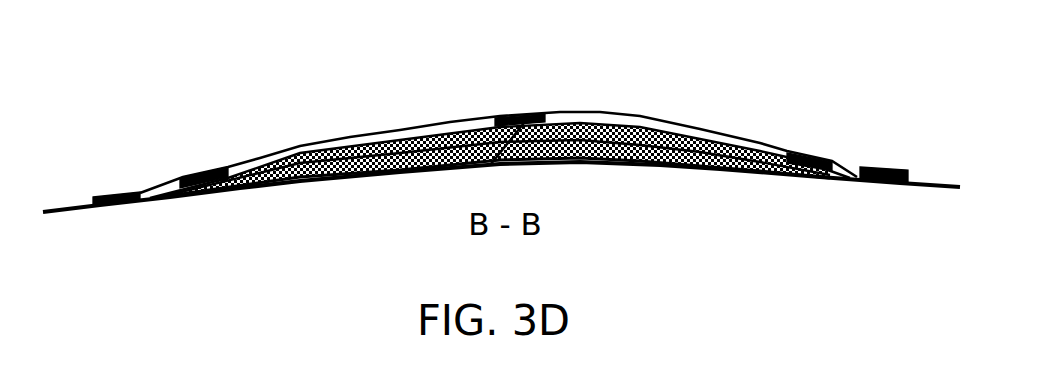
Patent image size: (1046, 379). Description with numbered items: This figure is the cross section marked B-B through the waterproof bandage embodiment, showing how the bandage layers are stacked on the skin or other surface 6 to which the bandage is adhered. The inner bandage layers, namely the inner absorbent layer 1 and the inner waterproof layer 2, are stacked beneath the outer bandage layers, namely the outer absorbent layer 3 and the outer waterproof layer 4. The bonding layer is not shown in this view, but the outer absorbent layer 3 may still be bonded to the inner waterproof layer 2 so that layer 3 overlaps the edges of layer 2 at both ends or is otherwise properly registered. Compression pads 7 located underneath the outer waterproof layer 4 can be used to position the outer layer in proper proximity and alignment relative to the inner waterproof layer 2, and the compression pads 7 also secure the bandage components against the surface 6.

The inner absorbent layer 1 is at (720, 150).
The inner waterproof layer 2 is at (655, 142).
The outer absorbent layer 3 is at (602, 130).
The outer waterproof layer 4 is at (550, 127).
The skin or other surface 6 is at (528, 118).
The compression pads 7 is at (120, 194).